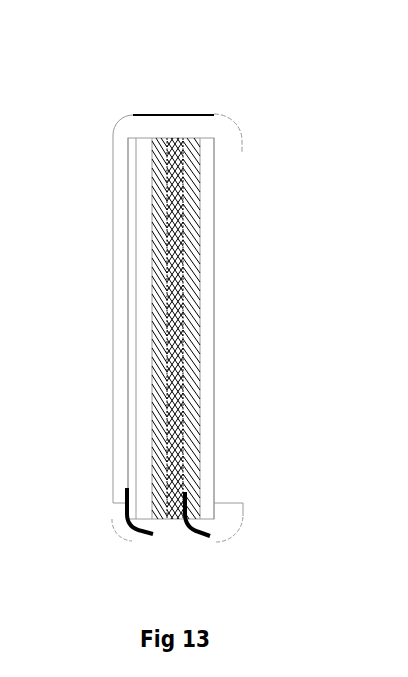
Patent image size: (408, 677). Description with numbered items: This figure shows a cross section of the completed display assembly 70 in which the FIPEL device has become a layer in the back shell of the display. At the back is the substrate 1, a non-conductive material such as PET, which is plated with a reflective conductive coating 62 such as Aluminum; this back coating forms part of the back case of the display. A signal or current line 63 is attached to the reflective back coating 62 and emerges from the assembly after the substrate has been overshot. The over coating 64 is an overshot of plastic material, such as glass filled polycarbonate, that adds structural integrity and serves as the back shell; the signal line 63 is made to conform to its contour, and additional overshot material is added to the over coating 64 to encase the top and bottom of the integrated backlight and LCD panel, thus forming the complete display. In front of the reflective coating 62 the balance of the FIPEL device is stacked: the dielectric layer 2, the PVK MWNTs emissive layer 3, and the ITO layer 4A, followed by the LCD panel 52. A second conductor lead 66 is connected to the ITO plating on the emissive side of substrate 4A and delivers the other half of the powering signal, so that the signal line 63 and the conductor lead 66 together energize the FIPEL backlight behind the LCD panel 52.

The battery assembly 70 is at (170, 299).
The substrate 1 is at (179, 299).
The reflective conductive coating 62 is at (128, 200).
The LCD panel 52 is at (215, 248).
The over coating 64 is at (112, 327).
The dielectric layer 2 is at (168, 343).
The PVK MWNTs emissive layer 3 is at (183, 392).
The ITO layer 4A is at (200, 455).
The signal or current line 63 is at (123, 502).
The conductor lead 66 is at (195, 538).